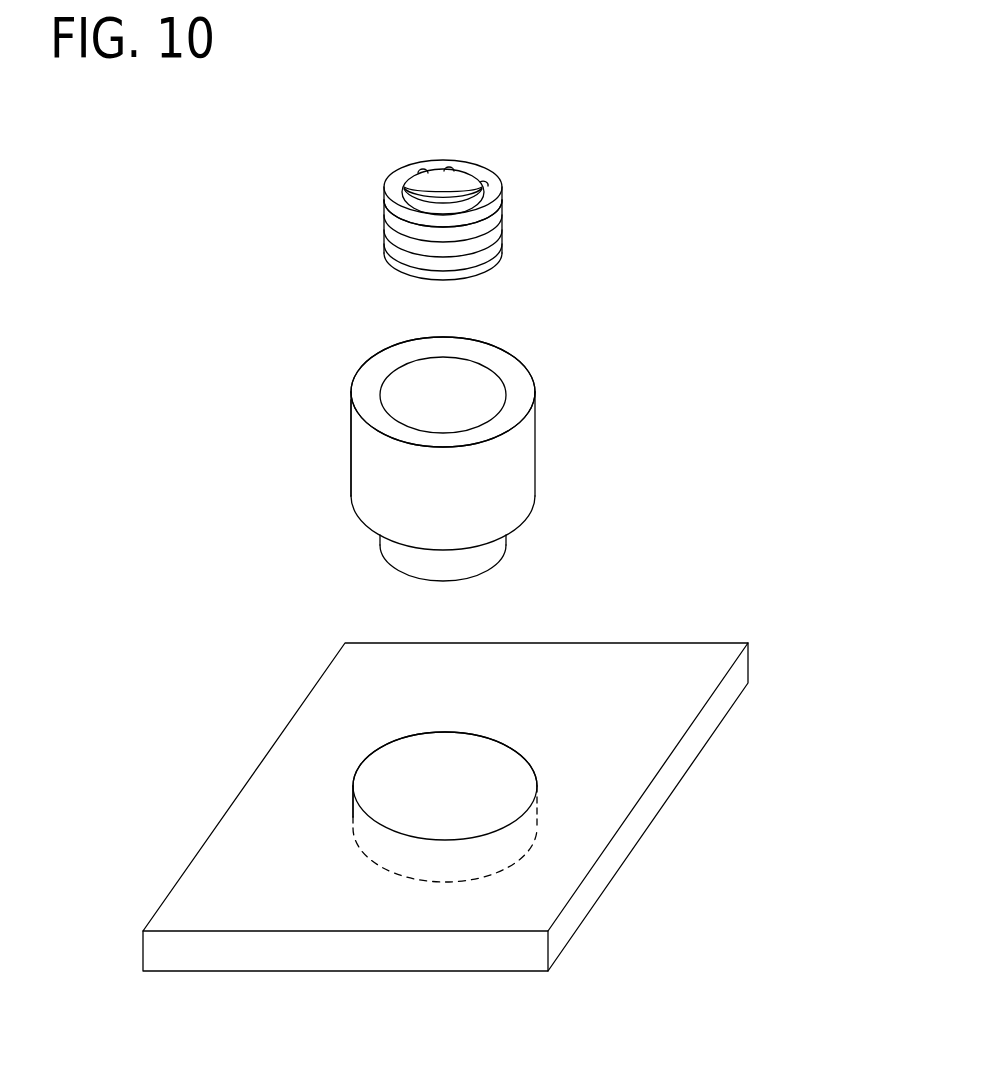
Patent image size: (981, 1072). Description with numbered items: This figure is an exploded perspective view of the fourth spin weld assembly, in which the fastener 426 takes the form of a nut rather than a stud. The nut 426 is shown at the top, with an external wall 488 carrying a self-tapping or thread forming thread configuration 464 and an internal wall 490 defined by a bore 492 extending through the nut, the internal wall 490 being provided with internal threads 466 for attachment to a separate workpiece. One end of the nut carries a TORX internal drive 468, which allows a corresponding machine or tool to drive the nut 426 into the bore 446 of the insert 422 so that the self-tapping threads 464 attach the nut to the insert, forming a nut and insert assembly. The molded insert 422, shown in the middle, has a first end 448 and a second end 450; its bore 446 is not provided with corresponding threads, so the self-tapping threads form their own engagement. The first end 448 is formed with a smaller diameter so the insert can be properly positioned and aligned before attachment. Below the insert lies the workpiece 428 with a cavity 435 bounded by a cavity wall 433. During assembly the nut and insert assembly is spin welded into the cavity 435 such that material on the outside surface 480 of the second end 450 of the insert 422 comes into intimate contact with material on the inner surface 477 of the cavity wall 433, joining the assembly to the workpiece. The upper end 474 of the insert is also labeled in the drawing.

The insert 422 is at (537, 437).
The fastener 426 is at (503, 207).
The workpiece 428 is at (237, 847).
The cavity wall 433 is at (537, 805).
The cavity 435 is at (447, 790).
The bore 446 is at (458, 375).
The first end 448 is at (492, 555).
The second end 450 is at (368, 405).
The self-tapping thread configuration 464 is at (503, 222).
The internal threads 466 is at (497, 174).
The TORX internal drive 468 is at (451, 168).
The upper end of bushing 474 is at (517, 373).
The inner surface 477 is at (355, 818).
The outside surface 480 is at (352, 478).
The external wall 488 is at (387, 216).
The internal wall 490 is at (410, 172).
The bore 492 is at (430, 176).